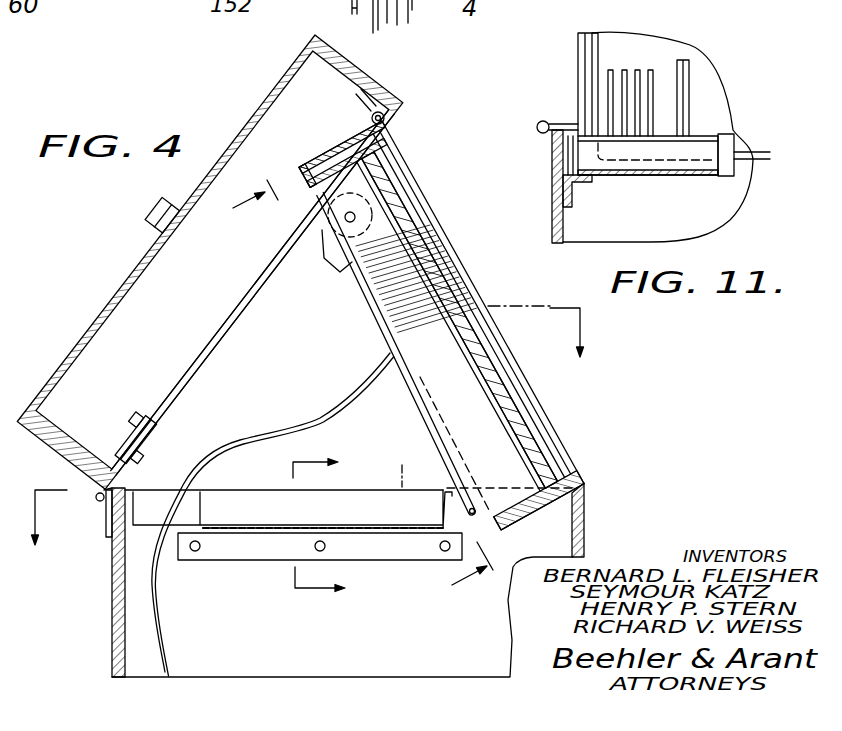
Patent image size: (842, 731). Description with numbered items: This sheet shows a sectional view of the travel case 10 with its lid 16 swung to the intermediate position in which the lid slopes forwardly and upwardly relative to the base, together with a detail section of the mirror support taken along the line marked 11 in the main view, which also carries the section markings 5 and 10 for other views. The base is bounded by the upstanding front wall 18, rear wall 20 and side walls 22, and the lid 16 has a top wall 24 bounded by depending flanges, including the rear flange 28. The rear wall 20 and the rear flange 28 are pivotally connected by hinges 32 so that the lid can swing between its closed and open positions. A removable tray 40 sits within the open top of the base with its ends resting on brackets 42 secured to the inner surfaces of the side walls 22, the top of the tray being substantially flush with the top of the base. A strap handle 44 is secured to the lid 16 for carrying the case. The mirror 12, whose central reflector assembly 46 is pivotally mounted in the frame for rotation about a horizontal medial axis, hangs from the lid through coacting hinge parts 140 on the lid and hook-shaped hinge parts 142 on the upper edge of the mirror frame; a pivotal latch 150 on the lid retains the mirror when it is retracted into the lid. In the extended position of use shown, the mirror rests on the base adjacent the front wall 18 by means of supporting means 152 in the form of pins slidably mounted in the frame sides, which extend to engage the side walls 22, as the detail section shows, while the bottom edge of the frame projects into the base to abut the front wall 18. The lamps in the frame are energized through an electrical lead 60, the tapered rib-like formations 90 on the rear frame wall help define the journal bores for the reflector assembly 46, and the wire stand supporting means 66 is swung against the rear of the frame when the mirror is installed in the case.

In FIG. 4, the section line 5- 5 is at (350, 393).
In FIG. 4, the travel case 10 is at (301, 441).
In FIG. 4, the section line 11- 11 is at (328, 531).
In FIG. 4, the mirror 12 is at (478, 273).
In FIG. 4, the lid 16 is at (104, 289).
In FIG. 4, the front wall 18 is at (585, 507).
In FIG. 4, the rear wall 20 is at (112, 630).
In FIG. 4, the side walls 22 is at (342, 582).
In FIG. 11, the side walls 22 is at (552, 215).
In FIG. 4, the top wall 24 is at (147, 253).
In FIG. 4, the rear flange 28 is at (212, 260).
In FIG. 4, the hinges 32 is at (99, 501).
In FIG. 4, the removable tray 40 is at (228, 512).
In FIG. 11, the removable tray 40 is at (668, 178).
In FIG. 11, the brackets 42 is at (572, 207).
In FIG. 4, the strap handle 44 is at (146, 214).
In FIG. 4, the reflector assembly 46 is at (558, 427).
In FIG. 11, the reflector assembly 46 is at (722, 72).
In FIG. 4, the electrical lead 60 is at (312, 427).
In FIG. 4, the supporting means 66 is at (430, 433).
In FIG. 11, the supporting means 66 is at (600, 33).
In FIG. 4, the rib-like formations 90 is at (412, 343).
In FIG. 4, the hinge parts 140 is at (384, 88).
In FIG. 4, the hinge parts 142 is at (348, 124).
In FIG. 4, the pivotal latch 150 is at (398, 119).
In FIG. 11, the supporting means 152 is at (548, 121).